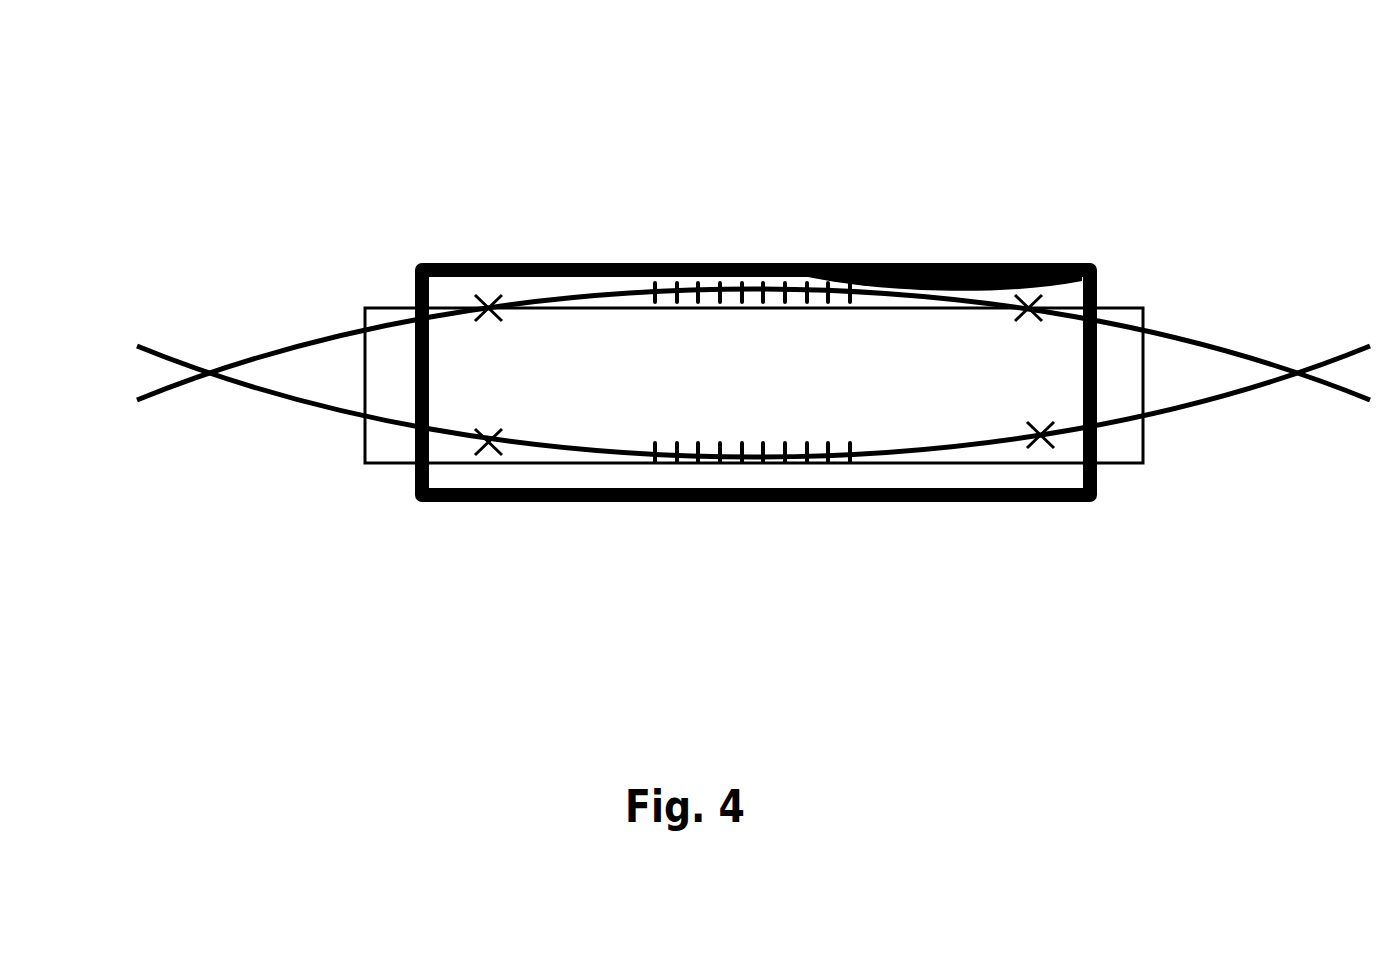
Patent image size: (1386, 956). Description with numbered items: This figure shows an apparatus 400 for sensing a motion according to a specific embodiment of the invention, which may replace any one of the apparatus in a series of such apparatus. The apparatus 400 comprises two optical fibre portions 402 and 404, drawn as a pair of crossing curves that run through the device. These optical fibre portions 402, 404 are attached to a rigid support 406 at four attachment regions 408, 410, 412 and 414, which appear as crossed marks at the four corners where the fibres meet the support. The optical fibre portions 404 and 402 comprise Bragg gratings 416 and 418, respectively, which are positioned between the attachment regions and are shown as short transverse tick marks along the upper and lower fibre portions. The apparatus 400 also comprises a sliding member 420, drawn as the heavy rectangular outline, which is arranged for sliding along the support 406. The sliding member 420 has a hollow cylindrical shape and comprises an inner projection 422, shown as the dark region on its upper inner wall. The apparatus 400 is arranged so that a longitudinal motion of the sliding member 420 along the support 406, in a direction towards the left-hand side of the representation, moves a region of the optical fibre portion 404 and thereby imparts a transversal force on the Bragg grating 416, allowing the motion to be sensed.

The apparatus 400 is at (810, 206).
The optical fibre portion 402 is at (149, 348).
The optical fibre portion 404 is at (172, 383).
The rigid support 406 is at (1127, 443).
The attachment region 408 is at (490, 303).
The attachment region 410 is at (1027, 307).
The attachment region 412 is at (490, 447).
The attachment region 414 is at (1040, 443).
The Bragg grating 416 is at (743, 277).
The Bragg grating 418 is at (778, 465).
The sliding member 420 is at (1098, 290).
The inner projection 422 is at (922, 265).